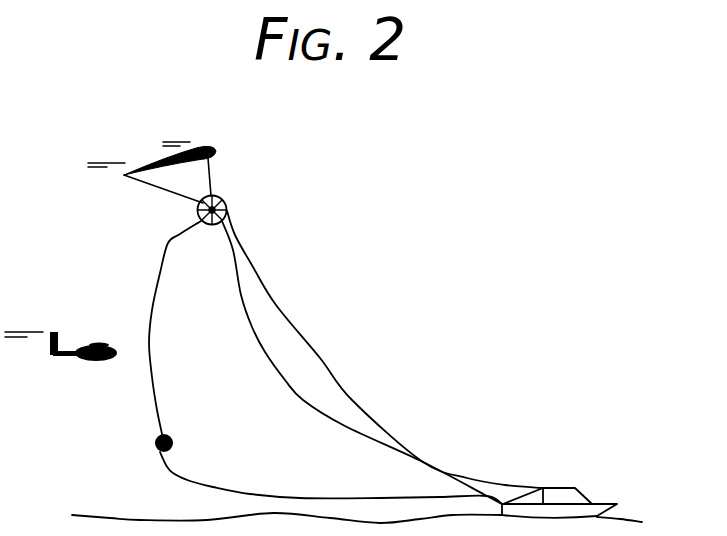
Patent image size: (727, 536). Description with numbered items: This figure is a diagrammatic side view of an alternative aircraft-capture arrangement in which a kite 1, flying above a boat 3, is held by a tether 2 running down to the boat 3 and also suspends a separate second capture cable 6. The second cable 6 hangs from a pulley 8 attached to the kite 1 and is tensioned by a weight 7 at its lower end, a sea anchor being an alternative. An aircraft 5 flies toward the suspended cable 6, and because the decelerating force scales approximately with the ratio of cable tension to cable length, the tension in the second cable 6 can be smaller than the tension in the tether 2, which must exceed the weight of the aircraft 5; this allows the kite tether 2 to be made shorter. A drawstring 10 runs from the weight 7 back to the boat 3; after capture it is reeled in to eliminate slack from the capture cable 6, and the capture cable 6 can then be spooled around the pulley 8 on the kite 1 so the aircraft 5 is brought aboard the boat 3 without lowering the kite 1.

The kite 1 is at (222, 147).
The tether 2 is at (284, 309).
The boat 3 is at (567, 476).
The aircraft 5 is at (94, 370).
The second cable 6 is at (235, 291).
The weight 7 is at (152, 448).
The pulley 8 is at (238, 203).
The drawstring 10 is at (215, 484).